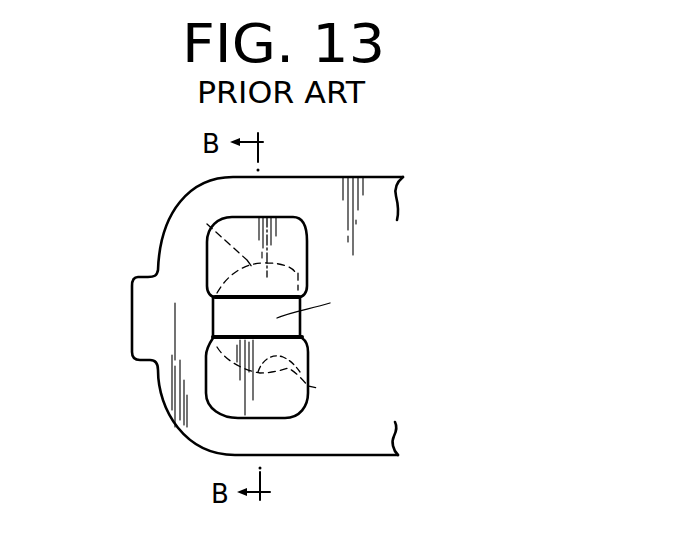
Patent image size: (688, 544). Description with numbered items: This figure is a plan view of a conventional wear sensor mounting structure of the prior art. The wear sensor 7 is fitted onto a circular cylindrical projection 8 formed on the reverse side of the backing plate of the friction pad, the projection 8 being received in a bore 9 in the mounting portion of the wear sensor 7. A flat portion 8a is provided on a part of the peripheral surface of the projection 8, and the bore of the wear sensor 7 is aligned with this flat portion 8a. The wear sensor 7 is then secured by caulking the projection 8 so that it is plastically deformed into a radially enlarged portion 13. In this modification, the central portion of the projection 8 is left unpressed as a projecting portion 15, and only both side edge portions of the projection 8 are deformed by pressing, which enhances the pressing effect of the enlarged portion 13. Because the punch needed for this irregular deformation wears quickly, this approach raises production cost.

The wear sensor 7 is at (158, 411).
The projection 8 is at (245, 246).
The flat portion 8a is at (302, 333).
The bore 9 is at (273, 378).
The radially enlarged portion 13 is at (196, 261).
The projecting portion 15 is at (313, 294).